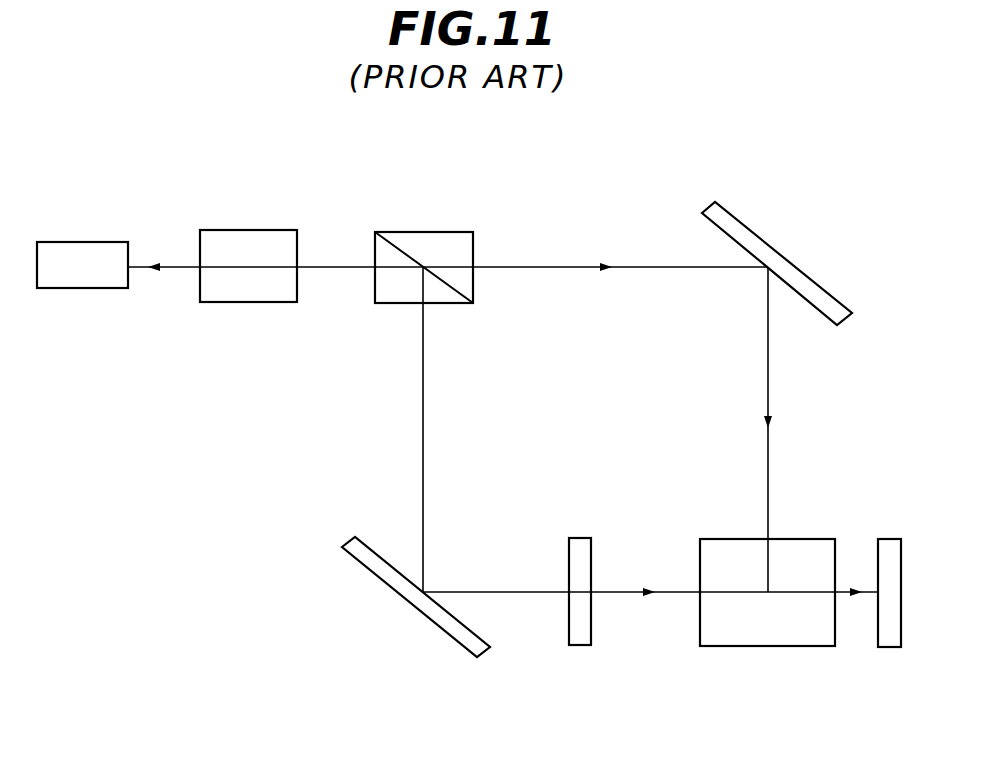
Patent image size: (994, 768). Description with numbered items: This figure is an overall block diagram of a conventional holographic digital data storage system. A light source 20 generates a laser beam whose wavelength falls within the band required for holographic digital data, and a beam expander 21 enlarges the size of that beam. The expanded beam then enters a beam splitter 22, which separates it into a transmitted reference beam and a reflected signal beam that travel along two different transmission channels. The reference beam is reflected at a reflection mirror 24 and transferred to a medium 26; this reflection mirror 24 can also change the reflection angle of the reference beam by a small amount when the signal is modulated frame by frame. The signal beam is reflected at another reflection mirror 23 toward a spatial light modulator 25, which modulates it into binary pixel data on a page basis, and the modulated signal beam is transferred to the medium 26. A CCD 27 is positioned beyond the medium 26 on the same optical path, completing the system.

The light source 20 is at (100, 243).
The beam expander 21 is at (271, 230).
The beam splitter 22 is at (446, 232).
The reflection mirror 23 is at (400, 594).
The reflection mirror 24 is at (760, 239).
The spatial light modulator 25 is at (578, 538).
The medium 26 is at (808, 539).
The CCD 27 is at (891, 539).